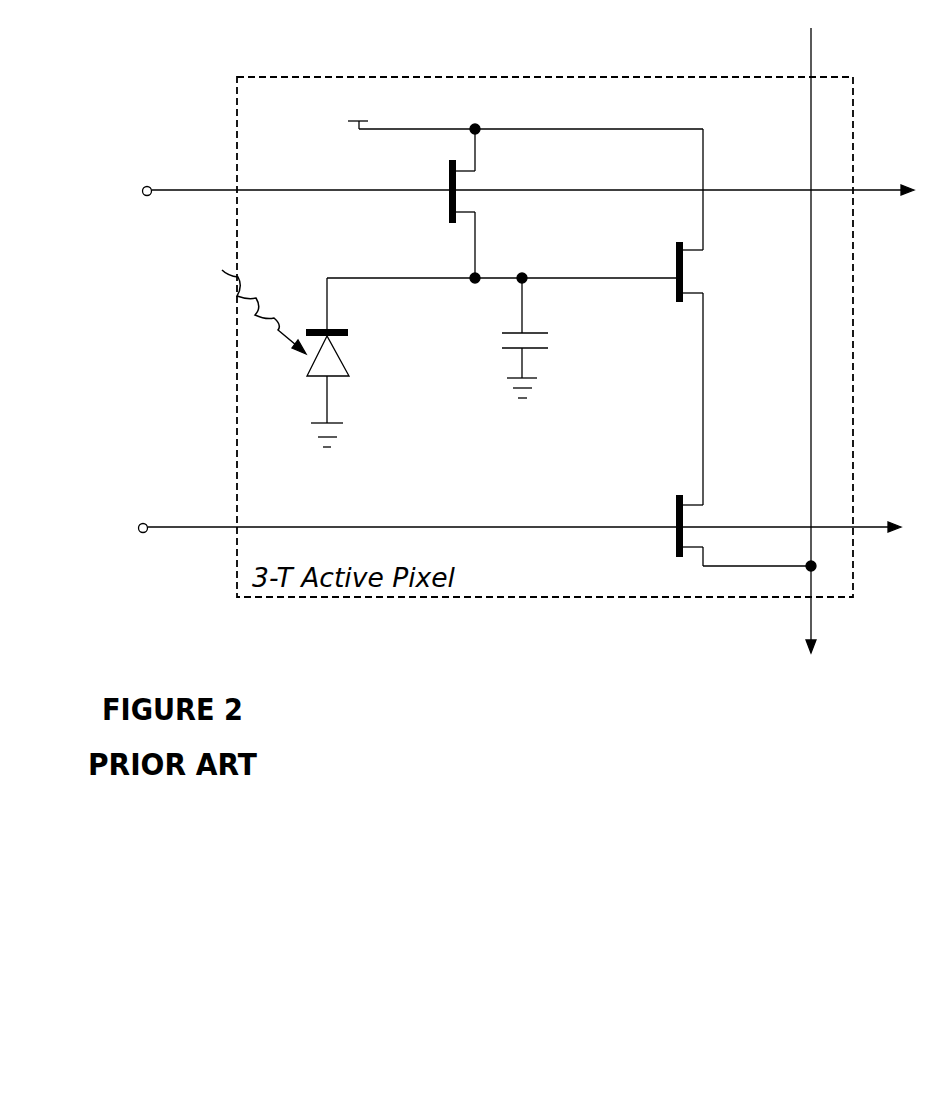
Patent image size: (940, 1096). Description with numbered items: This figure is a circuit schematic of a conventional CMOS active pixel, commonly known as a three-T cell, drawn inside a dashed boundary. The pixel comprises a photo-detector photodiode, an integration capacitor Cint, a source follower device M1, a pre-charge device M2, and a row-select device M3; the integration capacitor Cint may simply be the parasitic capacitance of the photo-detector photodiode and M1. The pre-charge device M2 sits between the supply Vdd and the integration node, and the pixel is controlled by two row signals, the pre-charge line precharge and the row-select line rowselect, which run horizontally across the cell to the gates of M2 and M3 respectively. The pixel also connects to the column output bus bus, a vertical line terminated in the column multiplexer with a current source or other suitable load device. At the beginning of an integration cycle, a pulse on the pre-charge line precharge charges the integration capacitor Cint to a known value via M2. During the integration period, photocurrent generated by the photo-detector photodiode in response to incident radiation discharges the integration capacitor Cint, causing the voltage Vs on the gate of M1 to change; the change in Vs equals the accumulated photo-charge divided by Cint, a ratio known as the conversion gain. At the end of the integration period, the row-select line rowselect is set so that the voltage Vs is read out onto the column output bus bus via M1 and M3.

The source follower device M1 is at (705, 373).
The pre-charge device M2 is at (484, 203).
The row-select device M3 is at (743, 530).
The integration capacitor Cint is at (500, 338).
The supply voltage Vdd is at (497, 184).
The voltage on the gate of M1 Vs is at (502, 263).
The photo-detector photodiode is at (285, 358).
The column output bus is at (811, 392).
The pre-charge line precharge is at (473, 192).
The row-select line rowselect is at (470, 530).